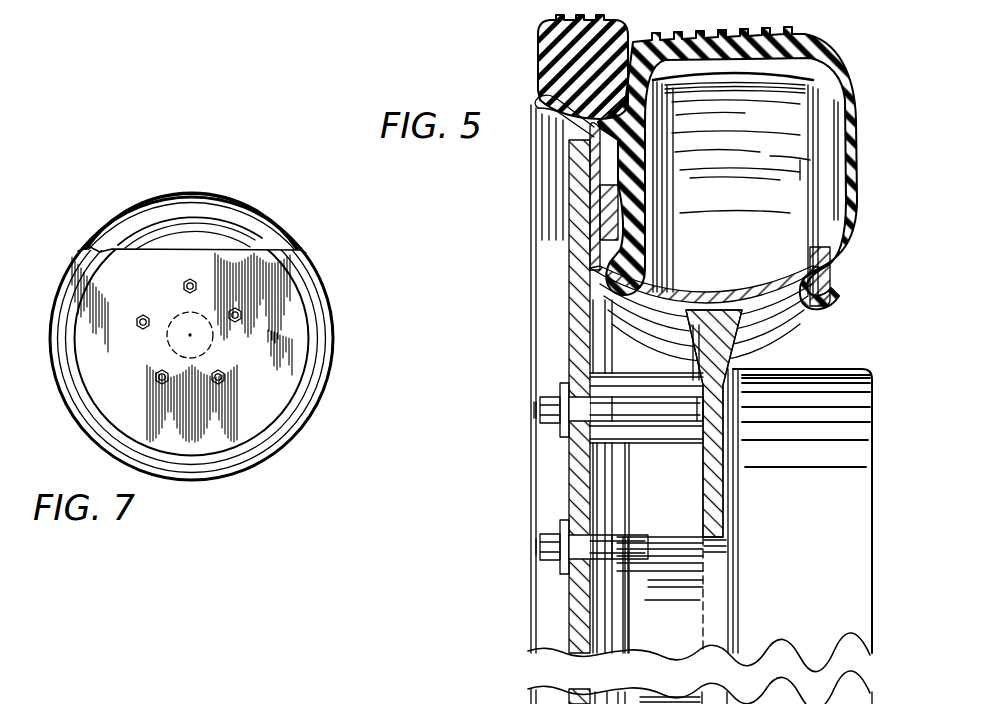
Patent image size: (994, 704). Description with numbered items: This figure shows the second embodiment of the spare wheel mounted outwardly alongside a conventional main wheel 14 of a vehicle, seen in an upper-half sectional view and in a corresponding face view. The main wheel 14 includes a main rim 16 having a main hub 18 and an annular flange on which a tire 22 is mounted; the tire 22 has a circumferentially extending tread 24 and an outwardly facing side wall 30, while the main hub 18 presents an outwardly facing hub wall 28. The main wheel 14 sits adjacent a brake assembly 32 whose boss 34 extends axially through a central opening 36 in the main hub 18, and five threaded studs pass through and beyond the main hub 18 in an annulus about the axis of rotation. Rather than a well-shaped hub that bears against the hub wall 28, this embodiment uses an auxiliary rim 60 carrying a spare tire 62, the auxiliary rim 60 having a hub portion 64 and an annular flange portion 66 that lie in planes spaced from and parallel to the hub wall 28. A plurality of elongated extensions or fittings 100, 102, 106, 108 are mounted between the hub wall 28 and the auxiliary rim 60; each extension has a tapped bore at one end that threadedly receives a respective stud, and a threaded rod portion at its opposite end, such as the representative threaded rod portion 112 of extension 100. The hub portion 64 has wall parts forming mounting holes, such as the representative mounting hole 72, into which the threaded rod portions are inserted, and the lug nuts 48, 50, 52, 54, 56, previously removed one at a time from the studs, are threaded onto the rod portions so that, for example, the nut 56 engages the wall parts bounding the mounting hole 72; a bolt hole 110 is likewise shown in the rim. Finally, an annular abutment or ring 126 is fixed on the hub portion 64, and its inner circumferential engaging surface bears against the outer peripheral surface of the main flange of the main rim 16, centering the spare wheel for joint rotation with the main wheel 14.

In FIG. 5, the main wheel 14 is at (853, 170).
In FIG. 5, the main rim 16 is at (757, 320).
In FIG. 5, the main hub 18 is at (707, 366).
In FIG. 5, the tire 22 is at (830, 58).
In FIG. 7, the tire 22 is at (258, 232).
In FIG. 5, the tread 24 is at (790, 28).
In FIG. 5, the hub wall 28 is at (700, 474).
In FIG. 5, the side wall 30 is at (618, 175).
In FIG. 5, the brake assembly 32 is at (813, 534).
In FIG. 5, the boss 34 is at (683, 626).
In FIG. 5, the central opening 36 is at (718, 550).
In FIG. 7, the lug nut 48 is at (140, 316).
In FIG. 7, the lug nut 50 is at (157, 382).
In FIG. 7, the lug nut 52 is at (198, 392).
In FIG. 7, the lug nut 54 is at (232, 320).
In FIG. 5, the lug nut 56 is at (548, 384).
In FIG. 7, the lug nut 56 is at (197, 283).
In FIG. 5, the auxiliary rim 60 is at (573, 332).
In FIG. 7, the auxiliary rim 60 is at (276, 307).
In FIG. 5, the spare tire 62 is at (536, 35).
In FIG. 7, the spare tire 62 is at (299, 405).
In FIG. 5, the hub portion 64 is at (569, 495).
In FIG. 5, the flange portion 66 is at (535, 104).
In FIG. 7, the flange portion 66 is at (306, 370).
In FIG. 5, the mounting hole 72 is at (566, 440).
In FIG. 5, the extension 100 is at (592, 382).
In FIG. 7, the extension 100 is at (183, 287).
In FIG. 7, the extension 102 is at (240, 322).
In FIG. 7, the extension 106 is at (225, 378).
In FIG. 7, the extension 108 is at (155, 376).
In FIG. 7, the bolt hole 110 is at (136, 326).
In FIG. 5, the threaded rod portion 112 is at (538, 411).
In FIG. 5, the ring 126 is at (598, 205).
In FIG. 7, the ring 126 is at (148, 246).